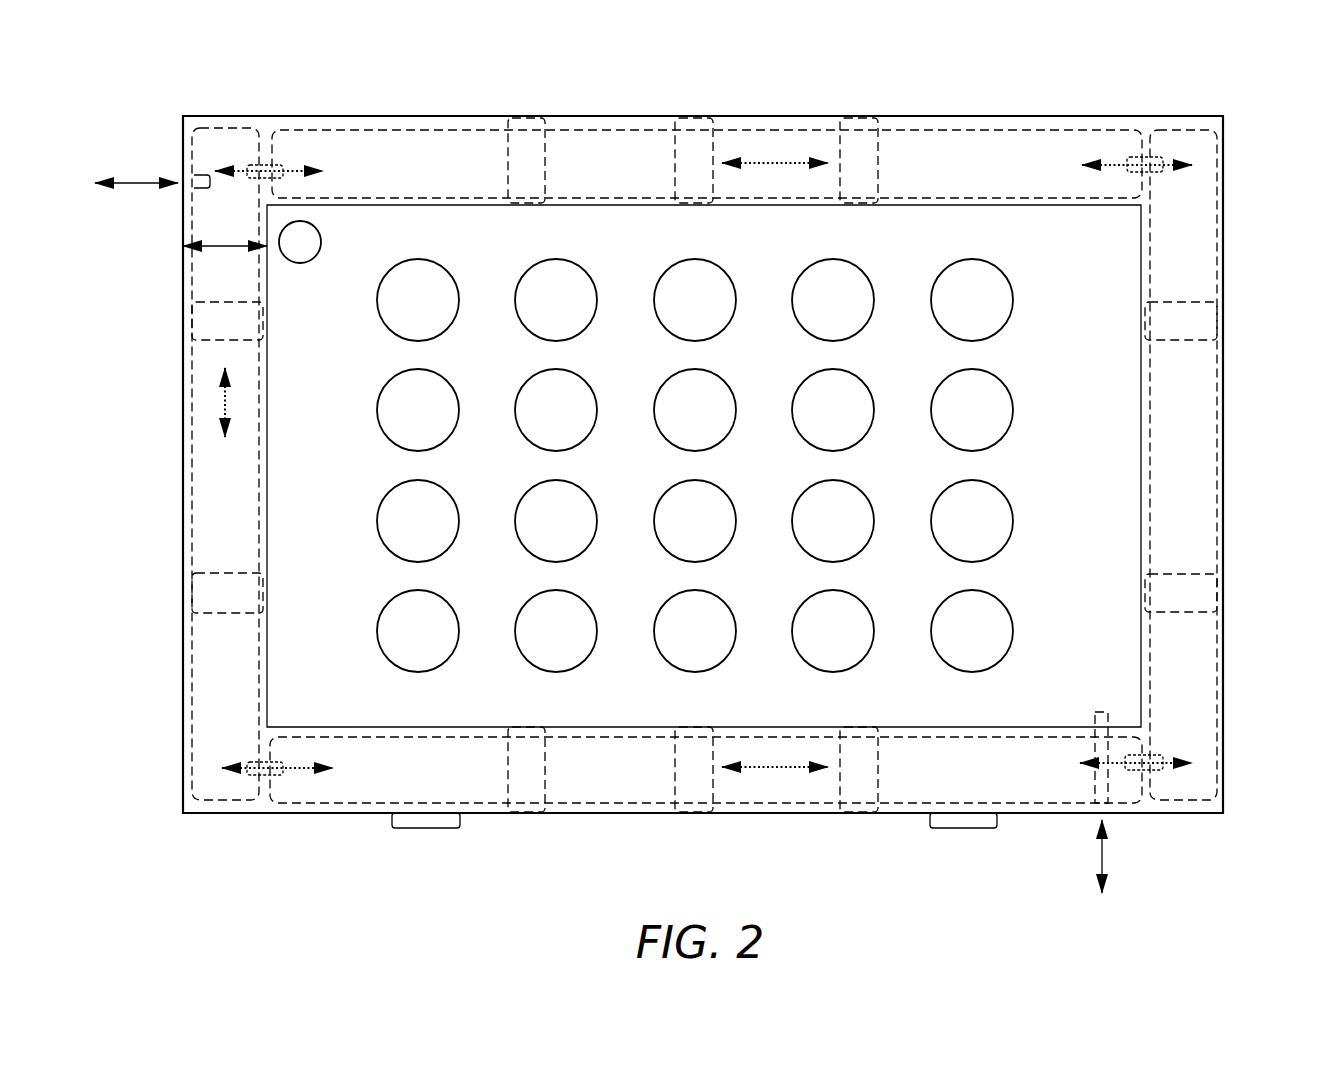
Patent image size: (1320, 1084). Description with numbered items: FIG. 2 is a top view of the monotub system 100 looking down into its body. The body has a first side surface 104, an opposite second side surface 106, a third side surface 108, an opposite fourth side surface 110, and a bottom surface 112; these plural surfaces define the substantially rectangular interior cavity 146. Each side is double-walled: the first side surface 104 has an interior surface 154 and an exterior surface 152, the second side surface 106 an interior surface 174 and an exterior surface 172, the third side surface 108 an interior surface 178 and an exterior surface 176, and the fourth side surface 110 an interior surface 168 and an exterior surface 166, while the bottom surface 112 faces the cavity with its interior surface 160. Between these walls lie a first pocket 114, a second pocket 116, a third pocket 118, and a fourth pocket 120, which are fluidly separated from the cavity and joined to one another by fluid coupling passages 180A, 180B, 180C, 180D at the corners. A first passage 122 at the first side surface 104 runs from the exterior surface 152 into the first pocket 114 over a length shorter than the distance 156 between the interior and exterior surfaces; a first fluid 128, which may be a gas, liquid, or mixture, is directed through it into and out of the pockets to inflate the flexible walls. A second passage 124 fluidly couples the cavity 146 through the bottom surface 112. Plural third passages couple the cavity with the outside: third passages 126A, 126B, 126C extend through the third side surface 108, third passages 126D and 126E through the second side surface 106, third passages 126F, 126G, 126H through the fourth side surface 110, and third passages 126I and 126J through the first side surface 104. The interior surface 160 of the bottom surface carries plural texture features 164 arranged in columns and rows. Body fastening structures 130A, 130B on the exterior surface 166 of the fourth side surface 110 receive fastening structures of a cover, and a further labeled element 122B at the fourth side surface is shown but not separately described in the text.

The monotub system 100 is at (1203, 106).
The first side surface 104 is at (176, 403).
The second side surface 106 is at (1227, 385).
The third side surface 108 is at (937, 115).
The fourth side surface 110 is at (333, 814).
The bottom surface 112 is at (303, 668).
The first pocket 114 is at (211, 533).
The second pocket 116 is at (1202, 533).
The third pocket 118 is at (1021, 158).
The fourth pocket 120 is at (380, 787).
The first passage 122 is at (189, 172).
The latch 122B is at (1093, 802).
The second passage 124 is at (313, 238).
The third passage 126A is at (528, 156).
The third passage 126B is at (697, 156).
The third passage 126C is at (862, 156).
The third passage 126D is at (1207, 320).
The third passage 126E is at (1207, 600).
The third passage 126F is at (861, 795).
The third passage 126G is at (695, 795).
The third passage 126H is at (527, 795).
The third passage 126I is at (203, 593).
The third passage 126J is at (203, 320).
The first fluid 128 is at (137, 186).
The body fastening structure 130A is at (425, 830).
The body fastening structure 130B is at (962, 830).
The interior cavity 146 is at (303, 700).
The exterior surface 152 is at (181, 129).
The interior surface 154 is at (267, 221).
The distance 156 is at (225, 248).
The interior surface 160 is at (1107, 235).
The texture features 164 is at (417, 258).
The exterior surface 166 is at (490, 814).
The interior surface 168 is at (614, 729).
The exterior surface 172 is at (1227, 655).
The interior surface 174 is at (1143, 708).
The exterior surface 176 is at (605, 115).
The interior surface 178 is at (651, 201).
The fluid coupling passage 180A is at (1152, 777).
The fluid coupling passage 180B is at (257, 778).
The fluid coupling passage 180C is at (252, 163).
The fluid coupling passage 180D is at (1133, 155).